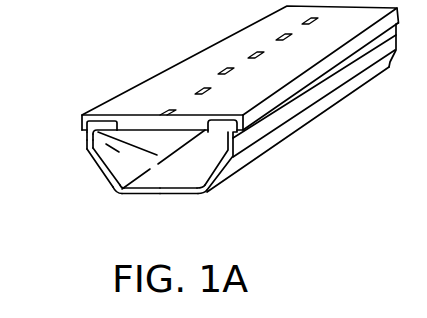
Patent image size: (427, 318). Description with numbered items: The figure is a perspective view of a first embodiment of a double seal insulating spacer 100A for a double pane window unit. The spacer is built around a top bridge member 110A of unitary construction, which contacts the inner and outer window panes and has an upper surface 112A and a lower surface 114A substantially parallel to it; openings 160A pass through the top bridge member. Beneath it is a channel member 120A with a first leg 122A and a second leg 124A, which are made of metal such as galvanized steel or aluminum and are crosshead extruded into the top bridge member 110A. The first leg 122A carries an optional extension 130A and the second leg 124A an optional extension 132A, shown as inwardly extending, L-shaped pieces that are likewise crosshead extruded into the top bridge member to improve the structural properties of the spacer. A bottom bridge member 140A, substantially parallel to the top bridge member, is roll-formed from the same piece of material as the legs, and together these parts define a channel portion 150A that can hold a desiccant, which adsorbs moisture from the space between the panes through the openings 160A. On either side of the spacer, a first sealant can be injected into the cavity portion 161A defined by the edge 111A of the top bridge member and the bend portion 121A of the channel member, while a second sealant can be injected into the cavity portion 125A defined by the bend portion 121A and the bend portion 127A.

The double seal insulating spacer 100A is at (81, 100).
The top bridge member 110A is at (200, 62).
The edge of top bridge member 111A is at (78, 117).
The upper surface 112A is at (137, 112).
The lower surface 114A is at (127, 153).
The channel member 120A is at (92, 172).
The bend portion 121A is at (86, 158).
The first leg 122A is at (109, 193).
The second leg 124A is at (217, 193).
The cavity portion 125A is at (100, 181).
The bend portion 127A is at (116, 196).
The extension 130A is at (107, 119).
The extension 132A is at (237, 122).
The bottom bridge member 140A is at (192, 196).
The channel portion 150A is at (203, 162).
The openings 160A is at (215, 91).
The cavity portion 161A is at (85, 148).